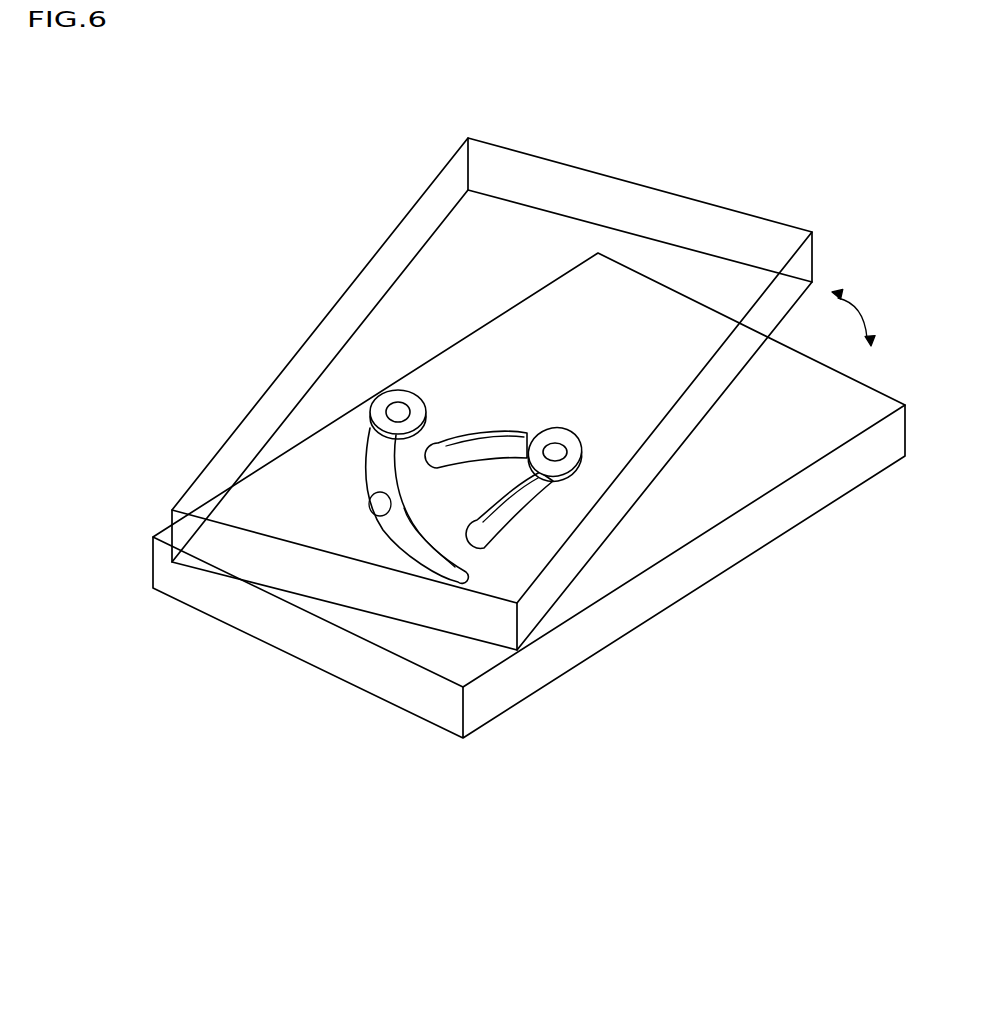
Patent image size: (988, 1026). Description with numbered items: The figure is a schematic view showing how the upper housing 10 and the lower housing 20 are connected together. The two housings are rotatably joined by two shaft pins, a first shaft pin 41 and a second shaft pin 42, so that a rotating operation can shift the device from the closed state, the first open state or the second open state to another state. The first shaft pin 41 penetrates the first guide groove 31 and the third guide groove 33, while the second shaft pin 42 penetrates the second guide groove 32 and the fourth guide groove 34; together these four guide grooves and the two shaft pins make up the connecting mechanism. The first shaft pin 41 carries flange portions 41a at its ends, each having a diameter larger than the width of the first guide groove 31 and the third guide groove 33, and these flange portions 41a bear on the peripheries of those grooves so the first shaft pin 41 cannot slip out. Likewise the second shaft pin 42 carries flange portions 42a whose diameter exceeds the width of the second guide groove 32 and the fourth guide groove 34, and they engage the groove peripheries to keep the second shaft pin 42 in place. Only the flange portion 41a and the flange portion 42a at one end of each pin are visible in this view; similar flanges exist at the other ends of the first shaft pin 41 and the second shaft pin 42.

The upper housing 10 is at (662, 190).
The lower housing 20 is at (798, 510).
The first guide groove 31 is at (533, 512).
The second guide groove 32 is at (364, 458).
The third guide groove 33 is at (477, 450).
The fourth guide groove 34 is at (402, 548).
The first shaft pin 41 is at (562, 462).
The flange portion 41a is at (557, 451).
The second shaft pin 42 is at (398, 396).
The flange portion 42a is at (397, 410).